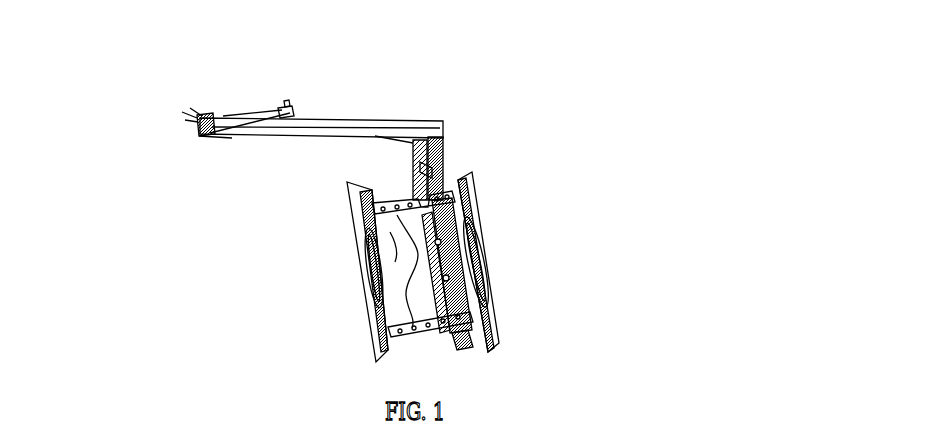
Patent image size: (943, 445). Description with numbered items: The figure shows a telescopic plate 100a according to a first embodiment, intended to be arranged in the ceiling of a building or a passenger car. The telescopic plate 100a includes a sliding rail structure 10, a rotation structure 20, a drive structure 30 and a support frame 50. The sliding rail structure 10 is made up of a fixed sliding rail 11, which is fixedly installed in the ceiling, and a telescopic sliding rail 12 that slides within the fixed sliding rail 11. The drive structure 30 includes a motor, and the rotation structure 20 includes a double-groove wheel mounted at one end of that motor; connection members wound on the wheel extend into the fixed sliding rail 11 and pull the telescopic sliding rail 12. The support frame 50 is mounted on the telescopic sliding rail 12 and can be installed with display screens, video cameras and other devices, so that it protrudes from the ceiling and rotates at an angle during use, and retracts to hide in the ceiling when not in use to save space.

The telescopic plate 100a is at (421, 195).
The sliding rail structure 10 is at (416, 107).
The fixed sliding rail 11 is at (380, 113).
The telescopic sliding rail 12 is at (485, 143).
The rotation structure 20 is at (205, 120).
The drive structure 30 is at (217, 132).
The support frame 50 is at (420, 250).